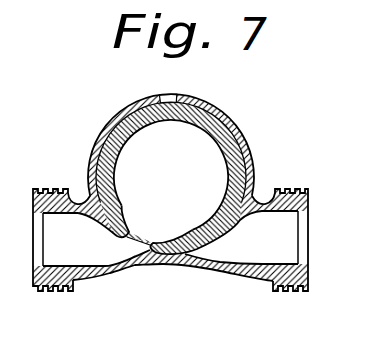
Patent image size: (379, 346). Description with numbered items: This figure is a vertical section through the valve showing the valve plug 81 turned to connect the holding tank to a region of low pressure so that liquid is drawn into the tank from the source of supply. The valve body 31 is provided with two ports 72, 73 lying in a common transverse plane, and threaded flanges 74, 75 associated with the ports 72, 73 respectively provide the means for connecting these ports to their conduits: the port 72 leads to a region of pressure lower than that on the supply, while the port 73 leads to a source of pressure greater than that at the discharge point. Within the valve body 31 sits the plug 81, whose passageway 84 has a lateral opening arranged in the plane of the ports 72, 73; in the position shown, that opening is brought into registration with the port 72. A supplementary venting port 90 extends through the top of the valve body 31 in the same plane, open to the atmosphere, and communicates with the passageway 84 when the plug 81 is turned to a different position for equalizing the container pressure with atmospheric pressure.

The valve body 31 is at (118, 128).
The port 72 is at (96, 239).
The port 73 is at (241, 237).
The threaded flange 74 is at (50, 188).
The threaded flange 75 is at (296, 188).
The valve plug 81 is at (233, 136).
The passageway 84 is at (171, 175).
The port 90 is at (180, 97).